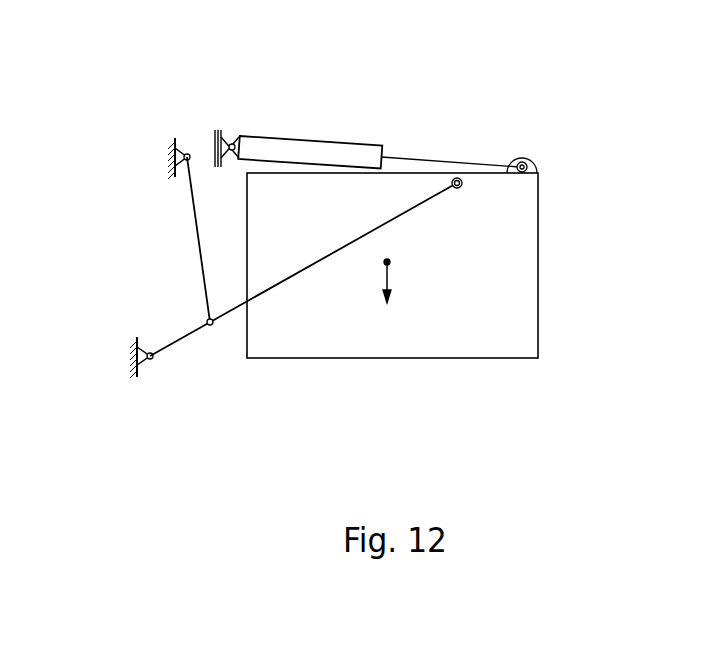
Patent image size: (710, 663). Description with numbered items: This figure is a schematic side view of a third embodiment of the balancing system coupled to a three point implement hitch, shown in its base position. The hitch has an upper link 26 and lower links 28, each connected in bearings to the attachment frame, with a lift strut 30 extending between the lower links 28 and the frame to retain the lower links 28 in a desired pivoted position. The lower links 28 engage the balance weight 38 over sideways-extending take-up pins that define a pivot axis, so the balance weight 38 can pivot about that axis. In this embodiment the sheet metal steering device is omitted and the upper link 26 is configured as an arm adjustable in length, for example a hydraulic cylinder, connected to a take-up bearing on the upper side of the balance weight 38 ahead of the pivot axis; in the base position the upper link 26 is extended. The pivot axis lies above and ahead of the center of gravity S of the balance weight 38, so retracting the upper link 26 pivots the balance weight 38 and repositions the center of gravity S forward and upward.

The upper links 26 is at (314, 150).
The lower links 28 is at (178, 340).
The lift strut 30 is at (198, 243).
The balance weight 38 is at (515, 317).
The center of gravity S is at (394, 268).